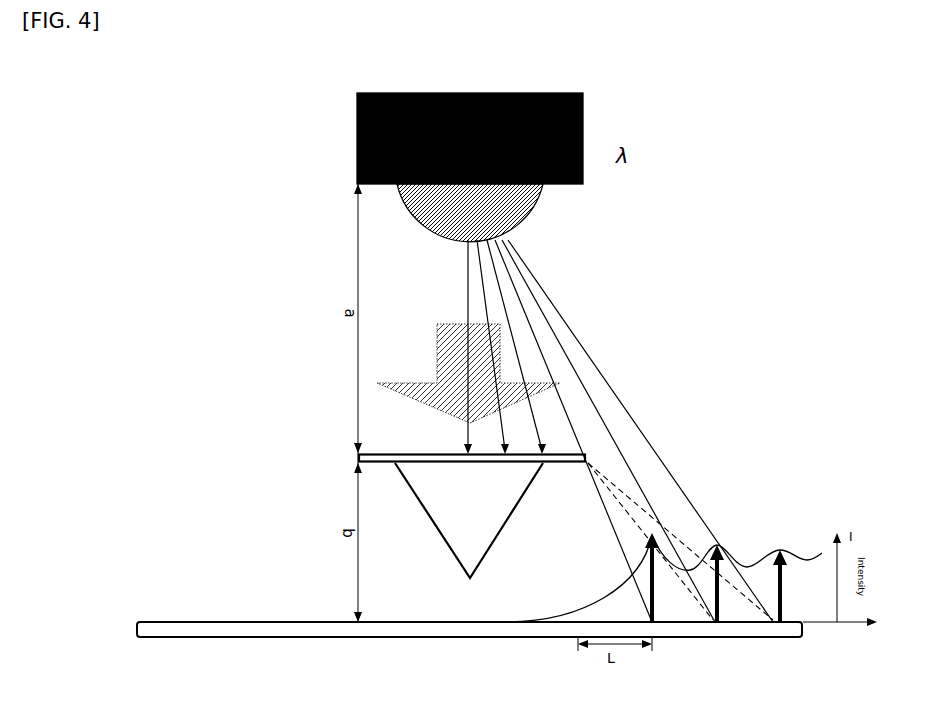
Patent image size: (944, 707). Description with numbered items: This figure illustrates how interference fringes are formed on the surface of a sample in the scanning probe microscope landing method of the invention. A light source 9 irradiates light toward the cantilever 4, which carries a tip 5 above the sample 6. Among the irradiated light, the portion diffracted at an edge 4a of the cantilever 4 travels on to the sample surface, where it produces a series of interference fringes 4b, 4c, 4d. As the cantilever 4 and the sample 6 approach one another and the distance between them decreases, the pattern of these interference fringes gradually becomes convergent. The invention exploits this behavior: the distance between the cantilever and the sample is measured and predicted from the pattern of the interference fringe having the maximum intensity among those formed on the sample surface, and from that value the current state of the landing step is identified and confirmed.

The cantilever 4 is at (385, 451).
The edge of the cantilever 4a is at (588, 456).
The interference fringe 4b is at (797, 545).
The interference fringe 4c is at (730, 540).
The interference fringe 4d is at (648, 530).
The prism 5 is at (505, 527).
The sample 6 is at (210, 620).
The light source 9 is at (541, 216).